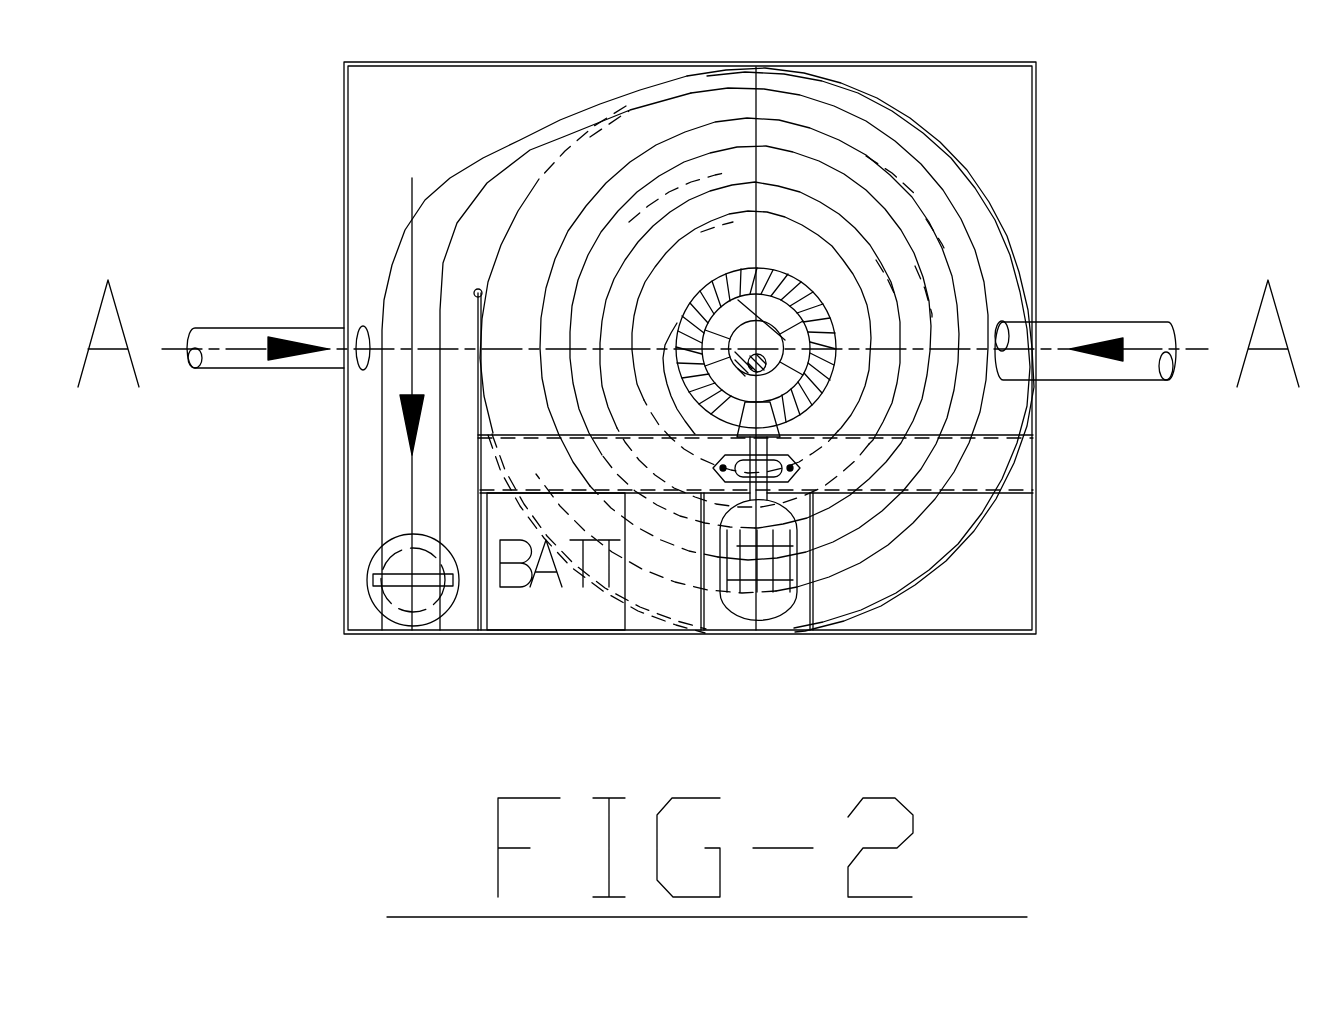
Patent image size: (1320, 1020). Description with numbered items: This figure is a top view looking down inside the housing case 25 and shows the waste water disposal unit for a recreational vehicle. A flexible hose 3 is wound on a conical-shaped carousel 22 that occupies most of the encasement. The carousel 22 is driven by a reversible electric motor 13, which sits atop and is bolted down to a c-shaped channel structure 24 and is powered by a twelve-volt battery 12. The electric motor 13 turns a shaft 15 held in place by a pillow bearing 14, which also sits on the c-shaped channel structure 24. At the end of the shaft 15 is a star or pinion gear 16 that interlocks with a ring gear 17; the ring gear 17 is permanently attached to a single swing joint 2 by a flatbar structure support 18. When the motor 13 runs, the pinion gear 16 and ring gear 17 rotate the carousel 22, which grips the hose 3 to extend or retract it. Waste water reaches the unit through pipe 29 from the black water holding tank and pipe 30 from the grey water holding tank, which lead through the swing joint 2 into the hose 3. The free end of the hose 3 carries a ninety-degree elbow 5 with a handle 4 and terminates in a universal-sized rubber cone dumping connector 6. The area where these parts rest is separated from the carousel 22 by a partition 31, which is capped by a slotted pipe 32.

The swing joint 2 is at (742, 312).
The hose 3 is at (483, 158).
The handle 4 is at (378, 587).
The 90 degree elbow 5 is at (397, 524).
The dumping connector 6 is at (393, 622).
The battery 12 is at (540, 608).
The electric motor 13 is at (788, 608).
The pillow bearing 14 is at (810, 465).
The shaft 15 is at (805, 478).
The pinion gear 16 is at (777, 429).
The ring gear 17 is at (803, 338).
The flatbar structure support 18 is at (787, 323).
The conical-shaped carousel 22 is at (494, 263).
The c-shaped channel structure 24 is at (722, 623).
The housing case 25 is at (893, 62).
The pipe 29 is at (1097, 322).
The pipe 30 is at (222, 327).
The partition 31 is at (478, 420).
The slotted pipe 32 is at (475, 297).